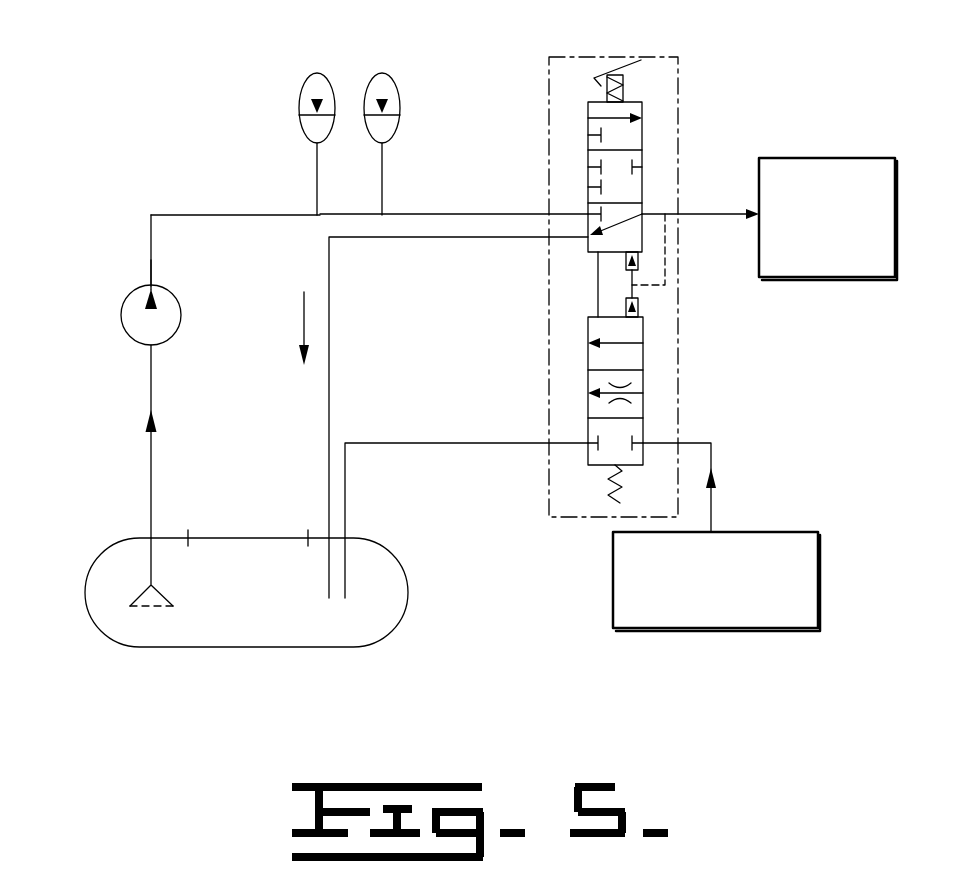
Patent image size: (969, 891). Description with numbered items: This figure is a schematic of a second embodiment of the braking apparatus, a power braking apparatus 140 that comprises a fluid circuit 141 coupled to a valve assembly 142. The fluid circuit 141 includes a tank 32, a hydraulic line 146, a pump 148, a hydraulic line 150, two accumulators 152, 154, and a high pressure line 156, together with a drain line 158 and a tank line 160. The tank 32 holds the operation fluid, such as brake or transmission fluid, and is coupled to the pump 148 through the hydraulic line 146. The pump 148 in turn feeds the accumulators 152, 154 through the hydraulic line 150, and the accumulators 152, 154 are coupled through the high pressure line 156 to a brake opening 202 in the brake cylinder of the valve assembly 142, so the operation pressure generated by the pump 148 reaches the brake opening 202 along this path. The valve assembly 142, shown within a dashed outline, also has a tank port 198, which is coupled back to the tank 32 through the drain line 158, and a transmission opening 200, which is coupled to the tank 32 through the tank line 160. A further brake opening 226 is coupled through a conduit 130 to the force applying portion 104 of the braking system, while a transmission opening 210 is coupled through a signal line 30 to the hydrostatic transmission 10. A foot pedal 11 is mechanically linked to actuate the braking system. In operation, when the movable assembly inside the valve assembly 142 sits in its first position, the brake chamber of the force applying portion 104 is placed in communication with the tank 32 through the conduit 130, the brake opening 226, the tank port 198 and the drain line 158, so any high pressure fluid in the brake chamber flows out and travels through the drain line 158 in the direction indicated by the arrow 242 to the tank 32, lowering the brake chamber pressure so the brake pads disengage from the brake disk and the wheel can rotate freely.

The hydrostatic transmission 10 is at (762, 628).
The foot pedal 11 is at (641, 60).
The signal line 30 is at (711, 443).
The tank 32 is at (135, 647).
The force applying portion 104 is at (865, 158).
The conduit 130 is at (700, 214).
The power braking apparatus 140 is at (144, 102).
The fluid circuit 141 is at (128, 185).
The valve assembly 142 is at (678, 97).
The hydraulic line 146 is at (151, 465).
The pump 148 is at (121, 315).
The hydraulic line 150 is at (151, 261).
The accumulator 152 is at (316, 73).
The accumulator 154 is at (382, 73).
The high pressure line 156 is at (437, 214).
The drain line 158 is at (464, 237).
The tank line 160 is at (462, 443).
The tank port 198 is at (570, 250).
The transmission opening 200 is at (568, 470).
The brake opening 202 is at (568, 188).
The transmission opening 210 is at (660, 385).
The brake opening 226 is at (658, 188).
The arrow 242 is at (304, 316).